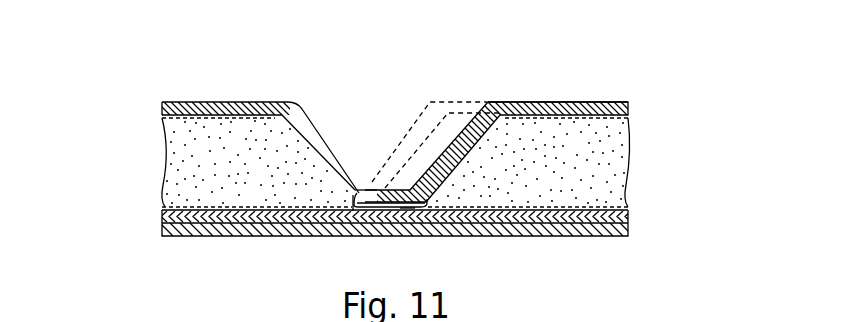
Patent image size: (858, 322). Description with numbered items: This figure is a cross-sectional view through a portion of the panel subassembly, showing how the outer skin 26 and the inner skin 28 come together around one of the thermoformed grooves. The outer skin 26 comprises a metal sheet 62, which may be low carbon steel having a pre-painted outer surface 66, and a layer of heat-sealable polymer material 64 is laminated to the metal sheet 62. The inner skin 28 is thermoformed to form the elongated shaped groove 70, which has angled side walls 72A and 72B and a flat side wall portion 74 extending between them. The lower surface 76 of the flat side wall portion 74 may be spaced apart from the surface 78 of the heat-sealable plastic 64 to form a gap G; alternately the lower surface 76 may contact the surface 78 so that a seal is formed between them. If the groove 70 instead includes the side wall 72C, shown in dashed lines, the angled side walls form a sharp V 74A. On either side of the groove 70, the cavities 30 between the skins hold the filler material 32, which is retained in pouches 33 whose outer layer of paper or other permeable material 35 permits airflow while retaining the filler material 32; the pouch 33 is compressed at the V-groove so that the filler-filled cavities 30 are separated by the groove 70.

The outer skin 26 is at (552, 237).
The inner skin 28 is at (563, 100).
The cavity 30 is at (180, 178).
The filler material 32 is at (180, 167).
The pouch 33 is at (163, 121).
The permeable material 35 is at (583, 208).
The metal sheet 62 is at (612, 237).
The heat-sealable polymer material 64 is at (617, 210).
The pre-painted outer surface 66 is at (525, 237).
The groove 70 is at (395, 133).
The angled side wall 72A is at (325, 128).
The angled side wall 72B is at (457, 135).
The side wall 72C is at (430, 98).
The flat side wall portion 74 is at (407, 188).
The sharp V 74A is at (373, 188).
The lower surface 76 is at (383, 208).
The surface 78 is at (188, 205).
The gap G is at (407, 206).